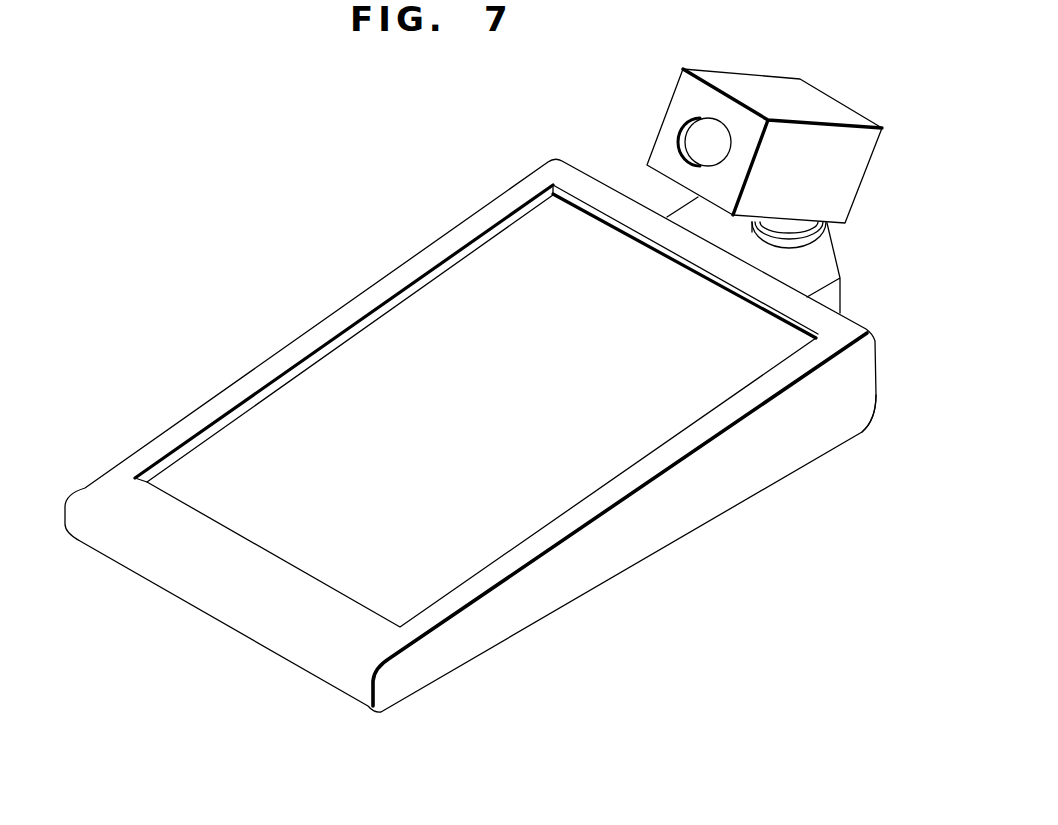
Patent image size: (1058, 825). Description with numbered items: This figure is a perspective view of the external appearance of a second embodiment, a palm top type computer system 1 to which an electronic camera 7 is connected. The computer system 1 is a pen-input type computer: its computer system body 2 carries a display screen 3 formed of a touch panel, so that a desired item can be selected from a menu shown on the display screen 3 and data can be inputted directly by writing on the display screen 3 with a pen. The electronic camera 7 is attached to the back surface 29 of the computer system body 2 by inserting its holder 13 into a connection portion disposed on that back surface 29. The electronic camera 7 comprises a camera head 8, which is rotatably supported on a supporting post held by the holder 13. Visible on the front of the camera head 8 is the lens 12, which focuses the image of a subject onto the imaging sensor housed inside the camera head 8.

The computer system 1 is at (490, 190).
The computer system body 2 is at (395, 263).
The display screen 3 is at (357, 364).
The electronic camera 7 is at (845, 92).
The camera head 8 is at (838, 188).
The lens 12 is at (703, 137).
The holder 13 is at (823, 258).
The back surface 29 is at (877, 386).